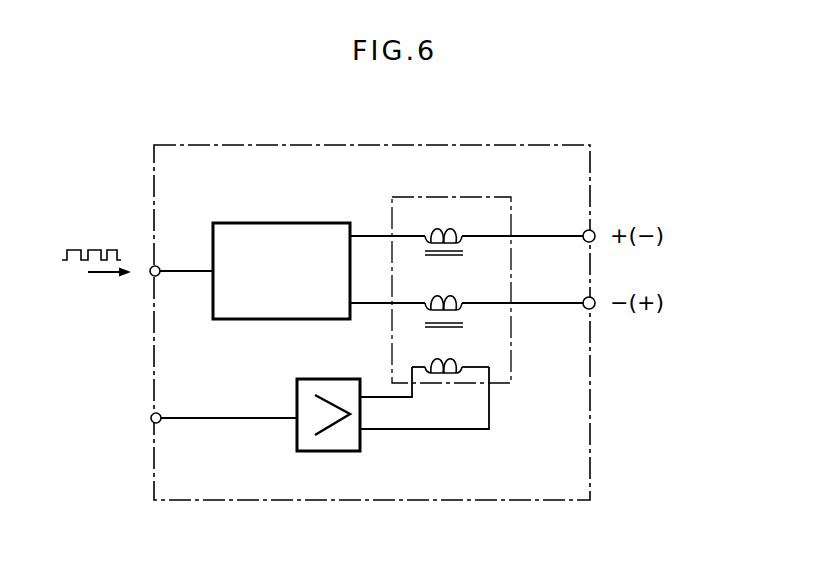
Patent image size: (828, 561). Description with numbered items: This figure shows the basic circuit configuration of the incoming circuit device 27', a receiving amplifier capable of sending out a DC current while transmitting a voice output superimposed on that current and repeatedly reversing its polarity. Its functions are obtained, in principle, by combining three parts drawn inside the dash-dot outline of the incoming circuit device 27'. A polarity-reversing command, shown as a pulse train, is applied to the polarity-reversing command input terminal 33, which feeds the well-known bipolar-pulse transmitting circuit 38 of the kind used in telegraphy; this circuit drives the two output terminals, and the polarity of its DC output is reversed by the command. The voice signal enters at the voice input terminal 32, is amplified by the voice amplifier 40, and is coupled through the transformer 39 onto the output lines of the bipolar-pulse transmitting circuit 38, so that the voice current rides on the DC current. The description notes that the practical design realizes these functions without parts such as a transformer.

The incoming circuit device 27' is at (401, 322).
The voice input terminal 32 is at (151, 414).
The polarity-reversing command input terminal 33 is at (151, 267).
The bipolar-pulse transmitting circuit 38 is at (317, 223).
The transformer 39 is at (509, 243).
The voice amplifier 40 is at (327, 451).